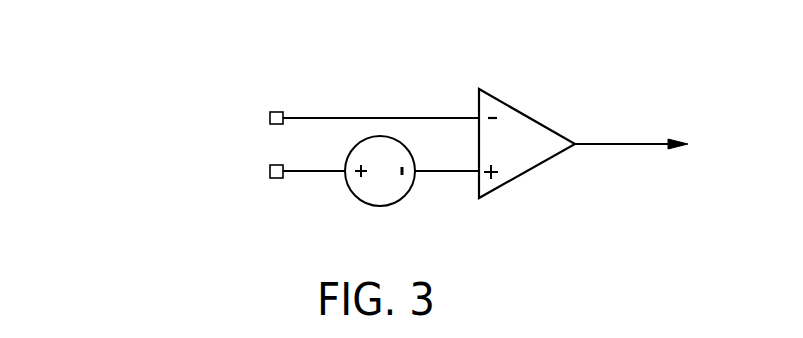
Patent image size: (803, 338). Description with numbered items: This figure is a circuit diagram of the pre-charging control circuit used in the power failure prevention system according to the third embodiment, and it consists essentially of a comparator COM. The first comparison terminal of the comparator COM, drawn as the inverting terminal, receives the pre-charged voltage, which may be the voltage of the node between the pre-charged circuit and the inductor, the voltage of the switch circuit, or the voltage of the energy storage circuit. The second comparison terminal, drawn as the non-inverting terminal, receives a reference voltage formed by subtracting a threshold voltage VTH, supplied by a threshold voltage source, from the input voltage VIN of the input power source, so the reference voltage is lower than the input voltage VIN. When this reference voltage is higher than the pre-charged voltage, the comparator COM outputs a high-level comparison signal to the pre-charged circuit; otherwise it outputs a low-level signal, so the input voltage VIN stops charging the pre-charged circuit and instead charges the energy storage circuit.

The comparator COM is at (528, 115).
The threshold voltage VTH is at (412, 191).
The input voltage VIN is at (278, 171).